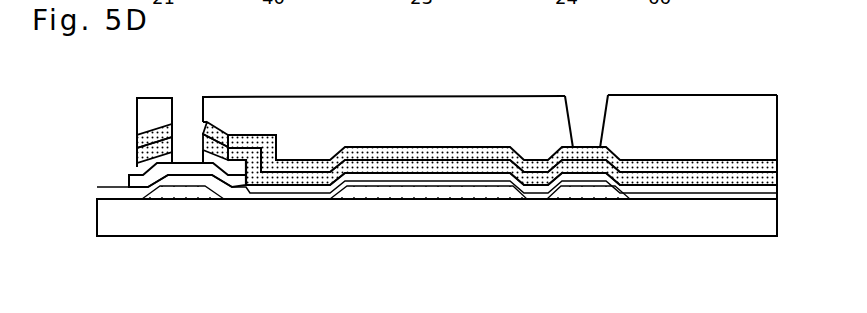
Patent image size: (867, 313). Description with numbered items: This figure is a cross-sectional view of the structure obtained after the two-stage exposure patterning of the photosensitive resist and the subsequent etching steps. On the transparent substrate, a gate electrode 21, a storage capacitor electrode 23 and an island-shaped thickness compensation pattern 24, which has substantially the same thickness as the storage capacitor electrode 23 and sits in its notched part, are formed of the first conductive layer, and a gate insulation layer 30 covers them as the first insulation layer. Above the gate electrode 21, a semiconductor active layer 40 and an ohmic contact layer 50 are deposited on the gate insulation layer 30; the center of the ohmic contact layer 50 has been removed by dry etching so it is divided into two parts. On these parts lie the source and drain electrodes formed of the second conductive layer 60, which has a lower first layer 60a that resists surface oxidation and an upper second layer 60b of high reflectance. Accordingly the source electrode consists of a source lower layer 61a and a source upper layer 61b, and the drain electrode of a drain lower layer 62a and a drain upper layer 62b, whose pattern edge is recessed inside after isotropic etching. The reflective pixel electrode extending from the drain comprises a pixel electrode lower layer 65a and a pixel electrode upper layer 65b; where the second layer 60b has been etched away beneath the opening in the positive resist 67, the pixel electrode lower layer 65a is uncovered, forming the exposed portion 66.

The gate electrode 21 is at (190, 196).
The storage capacitor electrode 23 is at (440, 198).
The thickness compensation pattern 24 is at (587, 198).
The gate insulation layer 30 is at (683, 193).
The semiconductor active layer 40 is at (233, 180).
The ohmic contact layer 50 is at (141, 172).
The second conductive layer 60 is at (134, 132).
The first layer 60a is at (710, 180).
The second layer 60b is at (777, 150).
The source lower layer 61a is at (143, 132).
The source upper layer 61b is at (155, 135).
The drain lower layer 62a is at (226, 130).
The drain upper layer 62b is at (211, 127).
The pixel electrode lower layer 65a is at (410, 165).
The pixel electrode upper layer 65b is at (404, 152).
The exposed portion 66 is at (594, 150).
The positive resist 67 is at (752, 95).